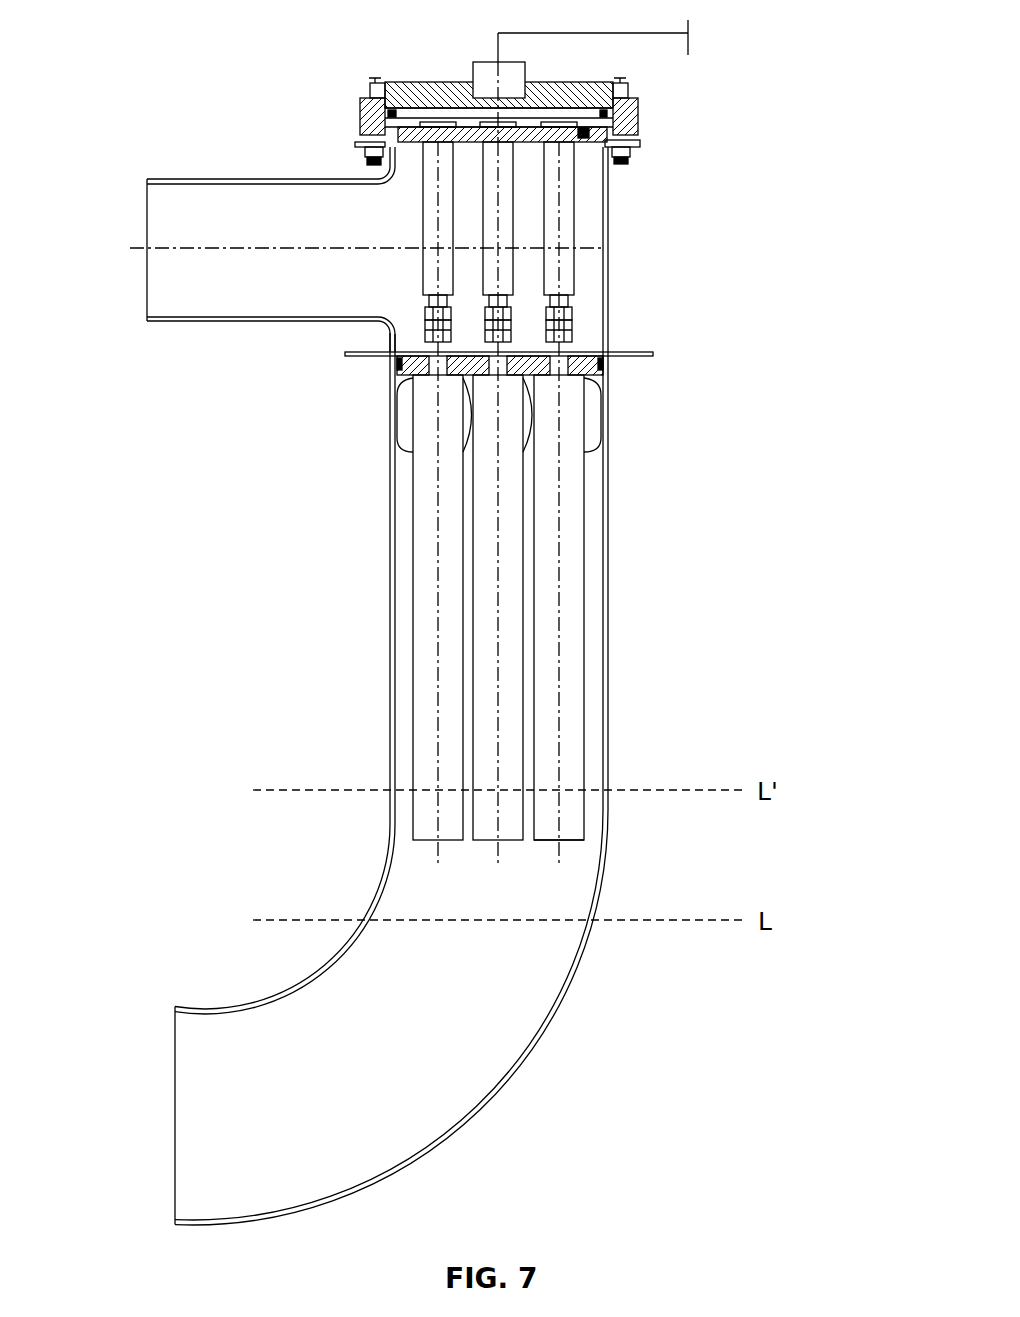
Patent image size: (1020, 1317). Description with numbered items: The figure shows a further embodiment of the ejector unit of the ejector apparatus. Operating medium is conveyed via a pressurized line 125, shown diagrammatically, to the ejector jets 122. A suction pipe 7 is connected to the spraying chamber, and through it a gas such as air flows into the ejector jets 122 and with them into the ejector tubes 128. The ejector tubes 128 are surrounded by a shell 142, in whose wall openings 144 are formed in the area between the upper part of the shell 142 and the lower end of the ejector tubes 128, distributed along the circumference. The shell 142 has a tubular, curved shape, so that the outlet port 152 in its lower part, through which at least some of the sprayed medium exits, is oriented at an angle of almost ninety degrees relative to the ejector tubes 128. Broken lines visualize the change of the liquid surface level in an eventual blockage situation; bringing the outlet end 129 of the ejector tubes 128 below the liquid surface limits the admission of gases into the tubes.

The suction pipe 7 is at (238, 178).
The pressurized line 125 is at (607, 33).
The ejector jet 122 is at (427, 322).
The ejector tube 128 is at (425, 643).
The outlet end 129 is at (585, 827).
The shell 142 is at (388, 860).
The opening 144 is at (407, 417).
The outlet port 152 is at (175, 1042).